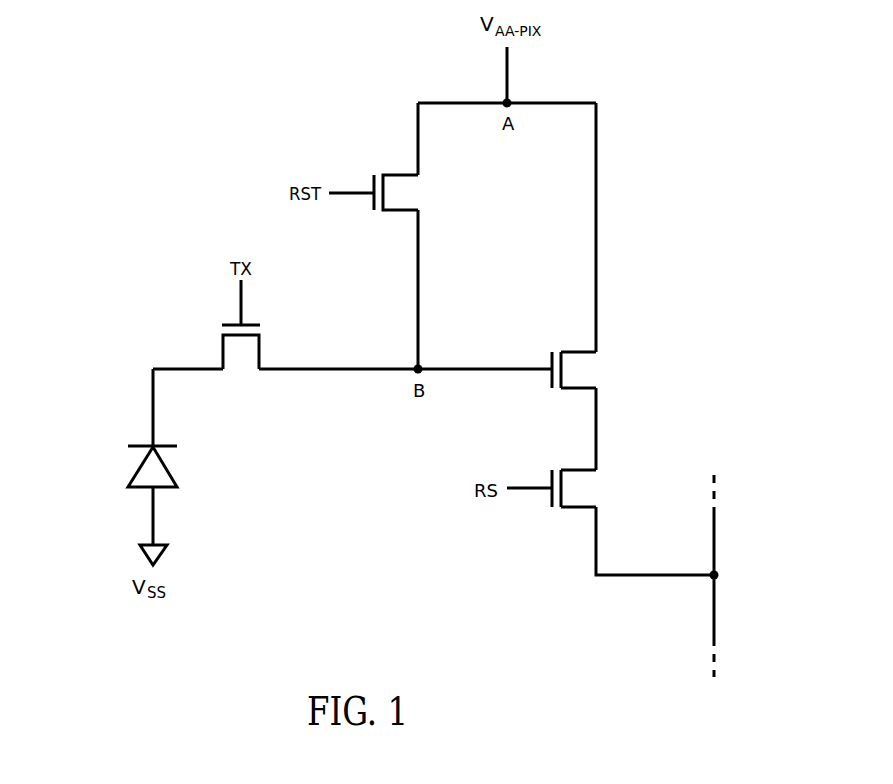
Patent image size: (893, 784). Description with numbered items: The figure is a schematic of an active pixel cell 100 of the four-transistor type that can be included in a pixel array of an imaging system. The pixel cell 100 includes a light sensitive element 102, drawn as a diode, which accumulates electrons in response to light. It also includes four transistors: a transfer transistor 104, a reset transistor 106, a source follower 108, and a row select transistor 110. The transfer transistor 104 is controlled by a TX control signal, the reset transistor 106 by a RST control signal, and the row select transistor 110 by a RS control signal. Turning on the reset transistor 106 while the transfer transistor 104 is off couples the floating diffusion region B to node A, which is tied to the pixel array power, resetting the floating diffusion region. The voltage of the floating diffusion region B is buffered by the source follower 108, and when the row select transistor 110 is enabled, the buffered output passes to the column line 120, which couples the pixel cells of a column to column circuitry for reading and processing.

The pixel cell 100 is at (175, 66).
The light sensitive element 102 is at (147, 472).
The transfer transistor 104 is at (241, 357).
The reset transistor 106 is at (407, 193).
The source follower 108 is at (583, 369).
The row select transistor 110 is at (583, 488).
The column line 120 is at (715, 548).